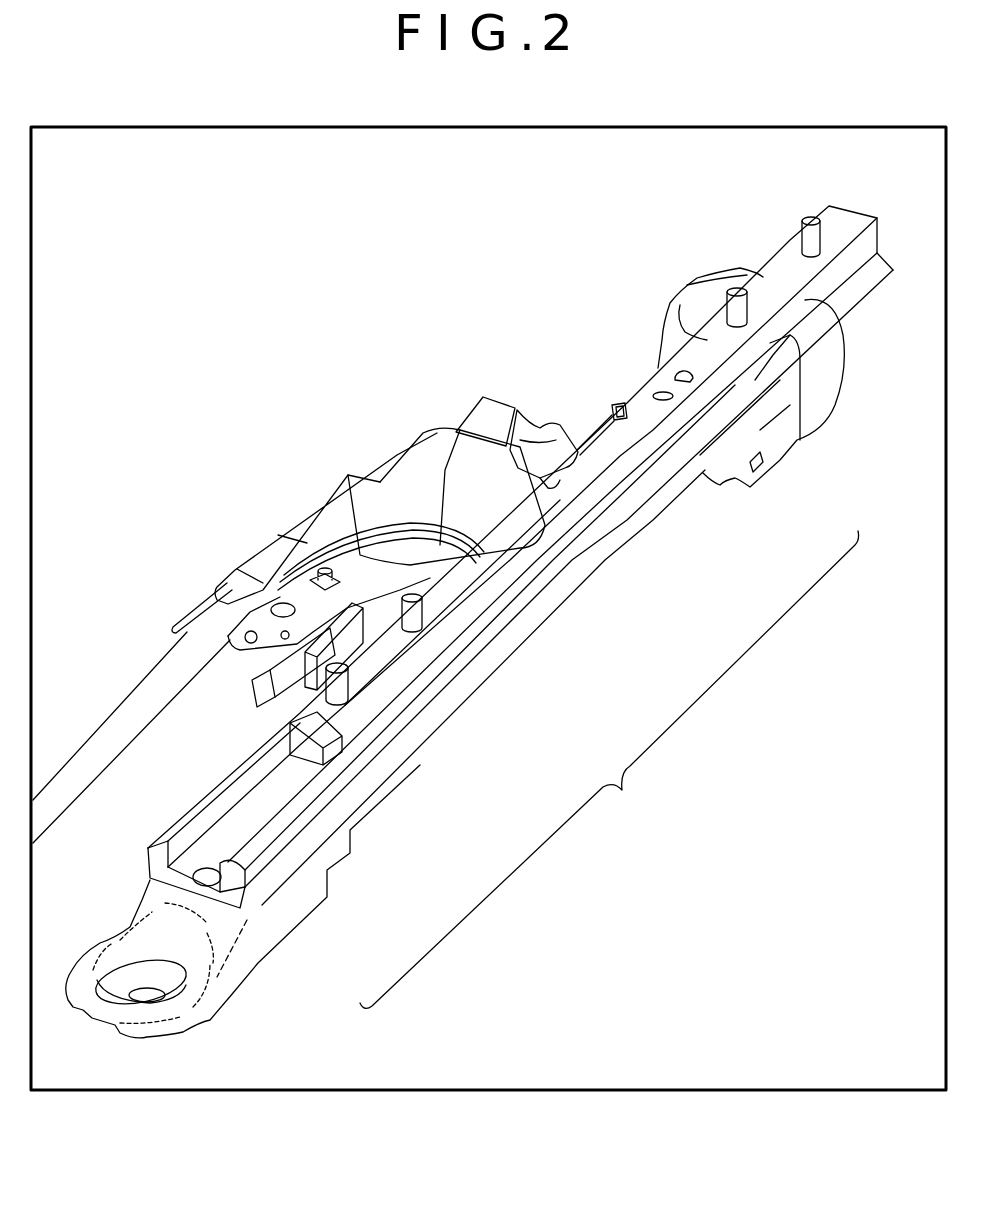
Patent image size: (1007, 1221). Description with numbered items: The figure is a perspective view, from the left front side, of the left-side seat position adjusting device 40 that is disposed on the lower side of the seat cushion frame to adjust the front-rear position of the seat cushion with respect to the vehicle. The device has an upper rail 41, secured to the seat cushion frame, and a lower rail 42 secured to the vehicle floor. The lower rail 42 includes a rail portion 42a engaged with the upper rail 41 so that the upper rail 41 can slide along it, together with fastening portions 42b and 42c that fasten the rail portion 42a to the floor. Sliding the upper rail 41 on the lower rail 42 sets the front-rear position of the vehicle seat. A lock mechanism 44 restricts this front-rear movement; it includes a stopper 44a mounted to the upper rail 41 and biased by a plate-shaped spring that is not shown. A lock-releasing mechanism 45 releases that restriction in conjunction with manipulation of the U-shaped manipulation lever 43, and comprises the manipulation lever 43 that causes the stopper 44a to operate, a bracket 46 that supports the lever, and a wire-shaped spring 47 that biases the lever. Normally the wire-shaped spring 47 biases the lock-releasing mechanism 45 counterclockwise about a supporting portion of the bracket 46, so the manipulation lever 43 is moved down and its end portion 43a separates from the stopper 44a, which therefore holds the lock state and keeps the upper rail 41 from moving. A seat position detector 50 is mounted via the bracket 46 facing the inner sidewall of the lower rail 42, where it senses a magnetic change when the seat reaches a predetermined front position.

The seat position adjusting device 40 is at (512, 191).
The upper rail 41 is at (853, 300).
The lower rail 42 is at (609, 769).
The rail portion 42a is at (455, 690).
The fastening portion 42b is at (778, 438).
The fastening portion 42c is at (302, 905).
The manipulation lever 43 is at (117, 727).
The end portion 43a is at (487, 418).
The lock mechanism 44 is at (479, 513).
The stopper 44a is at (543, 430).
The lock-releasing mechanism 45 is at (266, 500).
The bracket 46 is at (350, 477).
The wire-shaped spring 47 is at (180, 623).
The seat position detector 50 is at (242, 707).